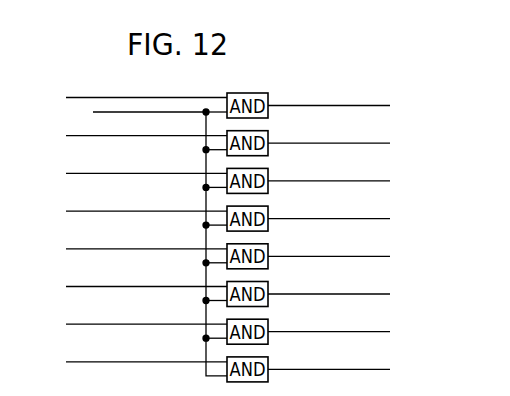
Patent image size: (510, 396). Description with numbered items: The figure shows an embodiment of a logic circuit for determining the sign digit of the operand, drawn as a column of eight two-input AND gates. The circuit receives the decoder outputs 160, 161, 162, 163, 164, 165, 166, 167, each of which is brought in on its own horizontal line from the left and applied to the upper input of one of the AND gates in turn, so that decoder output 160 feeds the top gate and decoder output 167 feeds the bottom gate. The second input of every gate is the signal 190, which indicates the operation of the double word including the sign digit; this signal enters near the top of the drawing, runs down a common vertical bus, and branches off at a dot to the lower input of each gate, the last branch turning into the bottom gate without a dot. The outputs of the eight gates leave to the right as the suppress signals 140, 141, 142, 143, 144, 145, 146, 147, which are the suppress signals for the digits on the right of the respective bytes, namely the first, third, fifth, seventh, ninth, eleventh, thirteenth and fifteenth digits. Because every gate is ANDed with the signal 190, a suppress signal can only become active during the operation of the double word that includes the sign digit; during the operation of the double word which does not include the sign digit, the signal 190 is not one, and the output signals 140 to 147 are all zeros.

The decoder output 160 is at (128, 101).
The decoder output 161 is at (128, 139).
The decoder output 162 is at (128, 176).
The decoder output 163 is at (128, 214).
The decoder output 164 is at (128, 252).
The decoder output 165 is at (128, 290).
The decoder output 166 is at (128, 327).
The decoder output 167 is at (128, 365).
The signal indicating the operation of the double word including the sign digit 190 is at (142, 240).
The suppress signal 140 is at (349, 107).
The suppress signal 141 is at (349, 144).
The suppress signal 142 is at (349, 182).
The suppress signal 143 is at (349, 220).
The suppress signal 144 is at (349, 257).
The suppress signal 145 is at (349, 295).
The suppress signal 146 is at (349, 333).
The suppress signal 147 is at (349, 370).